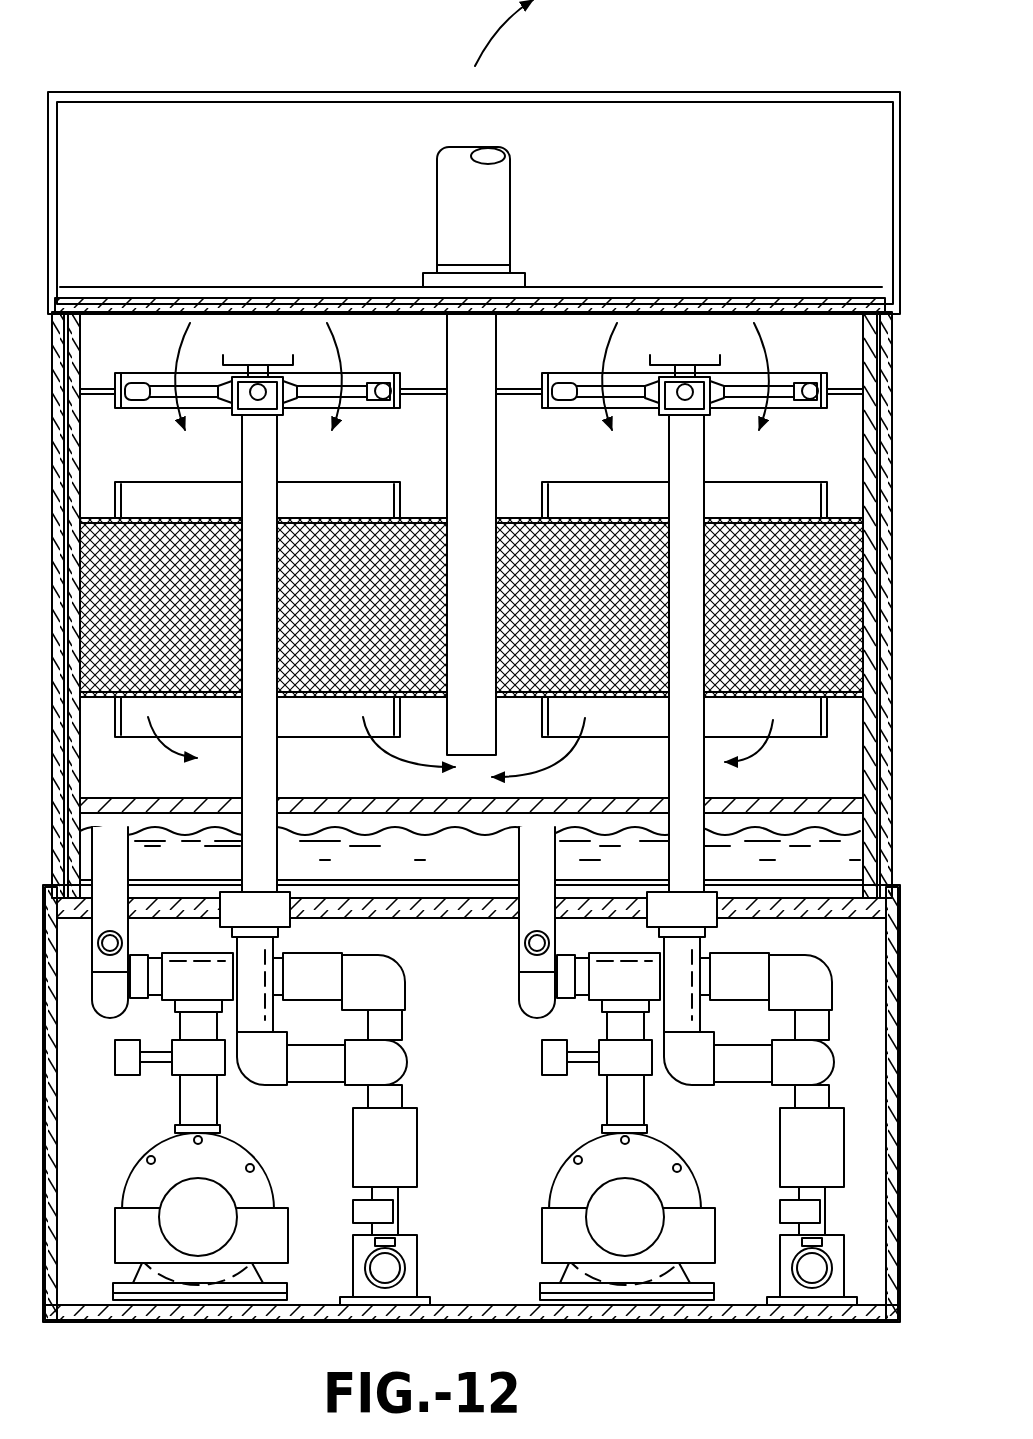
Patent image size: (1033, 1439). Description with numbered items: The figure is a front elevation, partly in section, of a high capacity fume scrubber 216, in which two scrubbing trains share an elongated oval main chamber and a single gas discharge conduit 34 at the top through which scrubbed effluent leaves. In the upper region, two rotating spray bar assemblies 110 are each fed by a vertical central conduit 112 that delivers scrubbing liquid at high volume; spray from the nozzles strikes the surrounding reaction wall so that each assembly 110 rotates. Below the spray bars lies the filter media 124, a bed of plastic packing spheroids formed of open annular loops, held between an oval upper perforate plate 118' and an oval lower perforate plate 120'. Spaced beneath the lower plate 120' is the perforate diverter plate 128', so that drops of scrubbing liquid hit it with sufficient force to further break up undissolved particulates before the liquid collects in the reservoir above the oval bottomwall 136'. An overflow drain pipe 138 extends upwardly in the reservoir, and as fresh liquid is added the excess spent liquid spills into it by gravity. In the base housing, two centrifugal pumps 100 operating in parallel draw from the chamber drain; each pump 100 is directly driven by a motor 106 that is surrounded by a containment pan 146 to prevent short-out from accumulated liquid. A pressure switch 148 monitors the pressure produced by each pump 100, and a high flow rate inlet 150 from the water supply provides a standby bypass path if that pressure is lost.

The scrubber 216 is at (222, 60).
The gas discharge conduit 34 is at (510, 156).
The filter media 124 is at (178, 522).
The rotating spray bar assembly 110 is at (200, 397).
The central conduit 112 is at (262, 456).
The oval shaped perforate plate 118' is at (471, 485).
The perforate diverter plate 128' is at (471, 781).
The oval shaped lower perforate plate 120' is at (483, 742).
The overflow drain pipe 138 is at (130, 930).
The oval shaped bottomwall 136' is at (471, 885).
The pressure switch 148 is at (128, 1066).
The motor 106 is at (195, 1205).
The centrifugal pump 100 is at (228, 1150).
The containment pan 146 is at (275, 1245).
The high flow rate inlet 150 is at (387, 1263).